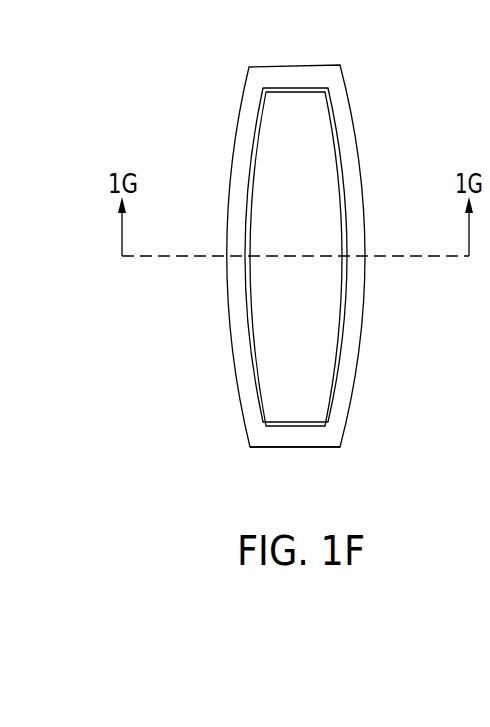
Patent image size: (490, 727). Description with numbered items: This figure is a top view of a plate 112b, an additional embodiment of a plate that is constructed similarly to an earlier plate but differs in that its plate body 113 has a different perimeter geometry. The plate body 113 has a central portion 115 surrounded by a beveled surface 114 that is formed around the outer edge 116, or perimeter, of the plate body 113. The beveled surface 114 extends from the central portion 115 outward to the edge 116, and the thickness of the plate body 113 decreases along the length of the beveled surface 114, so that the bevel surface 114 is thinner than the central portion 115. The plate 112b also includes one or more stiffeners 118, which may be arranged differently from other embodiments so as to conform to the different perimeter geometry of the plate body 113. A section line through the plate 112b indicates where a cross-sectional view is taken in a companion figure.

The plate 112b is at (162, 102).
The plate body 113 is at (260, 452).
The beveled surface 114 is at (353, 170).
The central portion 115 is at (320, 217).
The edge 116 is at (363, 328).
The stiffeners 118 is at (304, 90).